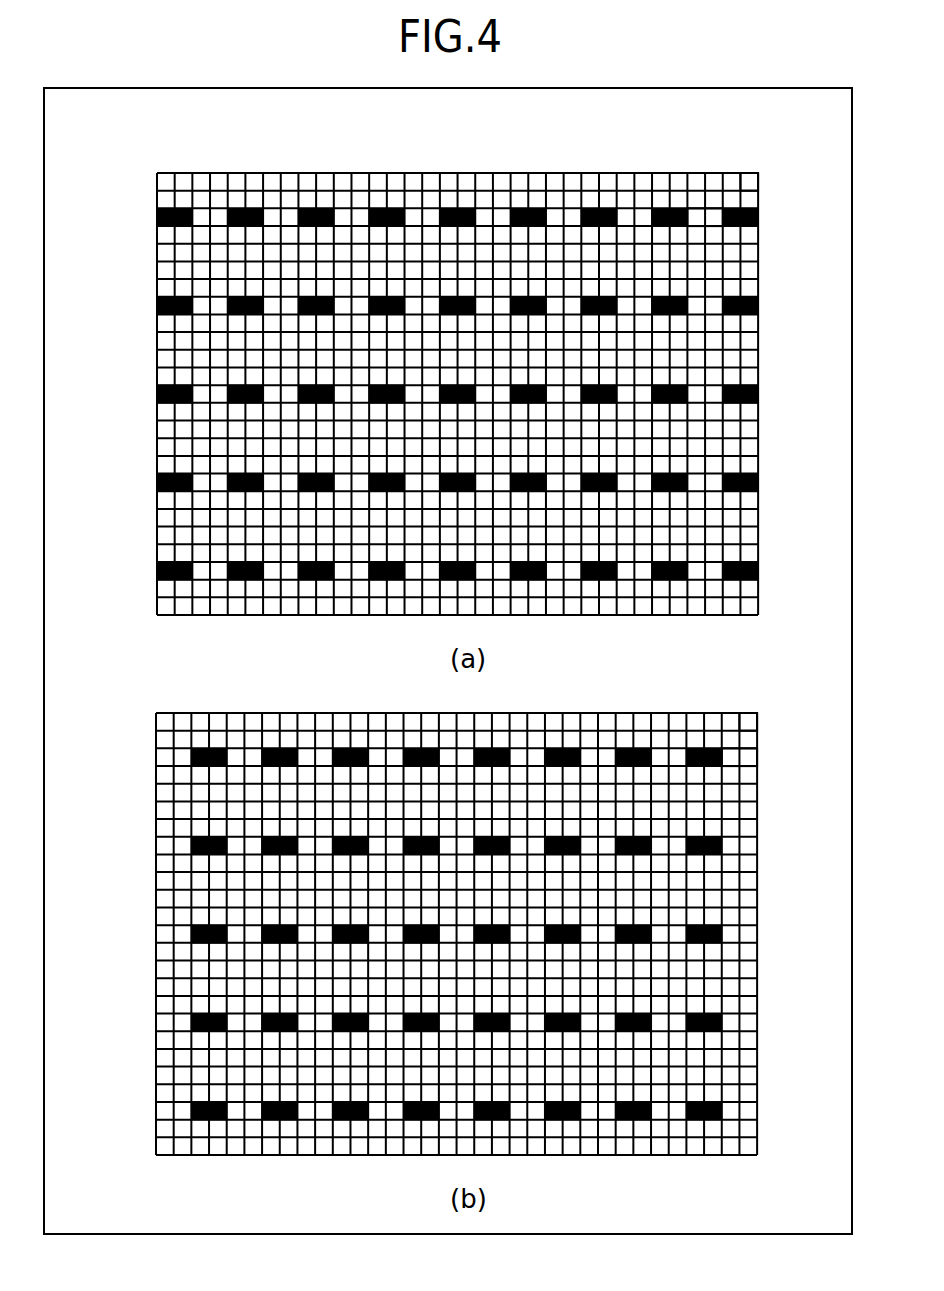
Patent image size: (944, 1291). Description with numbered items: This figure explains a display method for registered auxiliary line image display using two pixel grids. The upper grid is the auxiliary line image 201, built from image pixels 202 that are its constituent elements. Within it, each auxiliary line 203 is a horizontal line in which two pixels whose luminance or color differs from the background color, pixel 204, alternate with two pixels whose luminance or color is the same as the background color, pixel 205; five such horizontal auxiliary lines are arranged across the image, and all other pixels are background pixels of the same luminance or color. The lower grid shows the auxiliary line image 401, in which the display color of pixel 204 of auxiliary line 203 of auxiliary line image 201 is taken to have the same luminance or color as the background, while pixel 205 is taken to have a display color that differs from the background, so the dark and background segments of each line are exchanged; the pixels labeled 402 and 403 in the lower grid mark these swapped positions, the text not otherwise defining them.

The auxiliary line image 201 is at (414, 394).
The image pixel 202 is at (780, 421).
The auxiliary line 203 is at (416, 664).
The pixel whose luminance or color differs from the background color 204 is at (771, 236).
The pixel whose luminance or color is the same as the background color 205 is at (754, 274).
The auxiliary line image 401 is at (414, 934).
The recorded dot 402 is at (752, 774).
The non-recorded pixel 403 is at (770, 815).